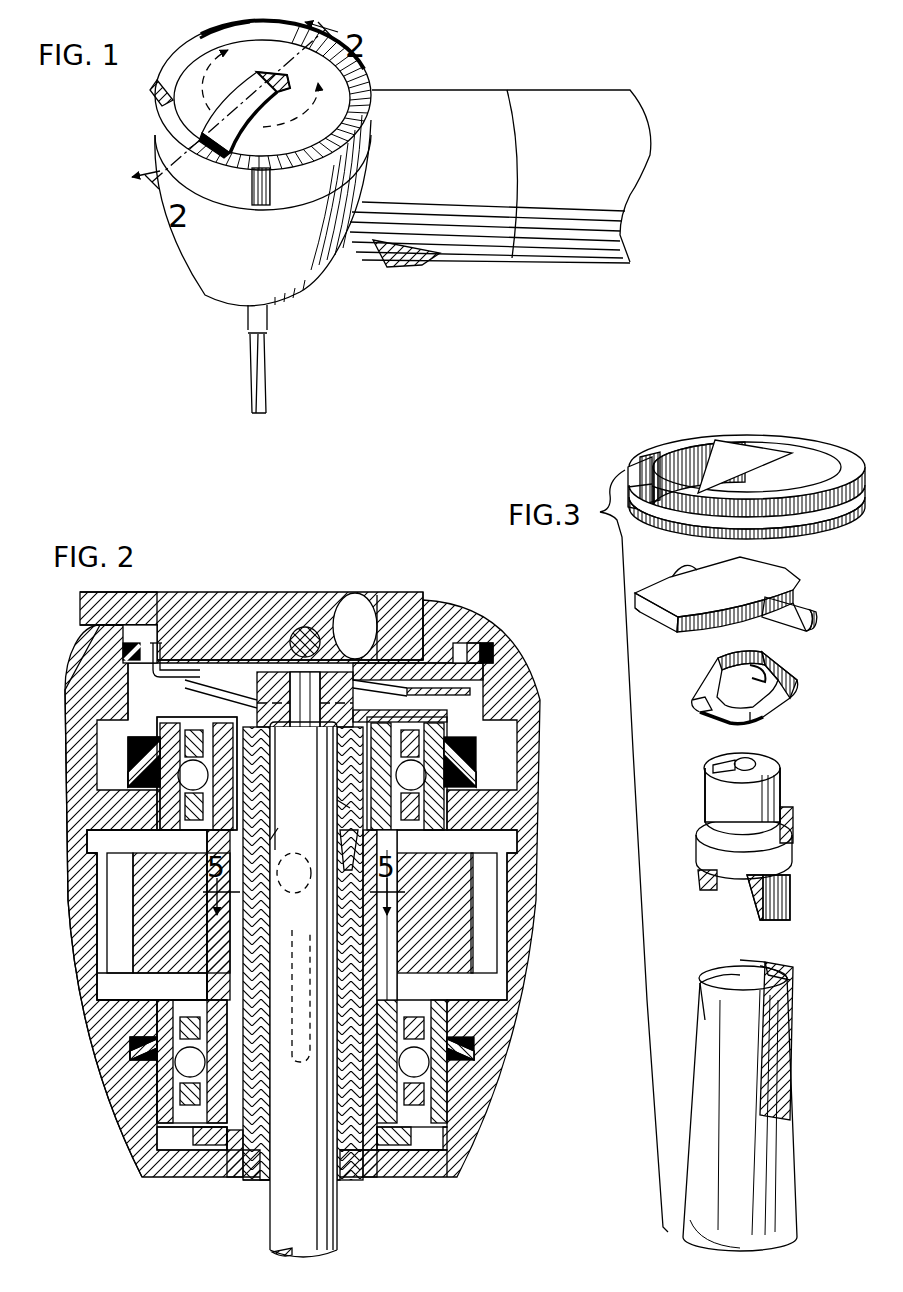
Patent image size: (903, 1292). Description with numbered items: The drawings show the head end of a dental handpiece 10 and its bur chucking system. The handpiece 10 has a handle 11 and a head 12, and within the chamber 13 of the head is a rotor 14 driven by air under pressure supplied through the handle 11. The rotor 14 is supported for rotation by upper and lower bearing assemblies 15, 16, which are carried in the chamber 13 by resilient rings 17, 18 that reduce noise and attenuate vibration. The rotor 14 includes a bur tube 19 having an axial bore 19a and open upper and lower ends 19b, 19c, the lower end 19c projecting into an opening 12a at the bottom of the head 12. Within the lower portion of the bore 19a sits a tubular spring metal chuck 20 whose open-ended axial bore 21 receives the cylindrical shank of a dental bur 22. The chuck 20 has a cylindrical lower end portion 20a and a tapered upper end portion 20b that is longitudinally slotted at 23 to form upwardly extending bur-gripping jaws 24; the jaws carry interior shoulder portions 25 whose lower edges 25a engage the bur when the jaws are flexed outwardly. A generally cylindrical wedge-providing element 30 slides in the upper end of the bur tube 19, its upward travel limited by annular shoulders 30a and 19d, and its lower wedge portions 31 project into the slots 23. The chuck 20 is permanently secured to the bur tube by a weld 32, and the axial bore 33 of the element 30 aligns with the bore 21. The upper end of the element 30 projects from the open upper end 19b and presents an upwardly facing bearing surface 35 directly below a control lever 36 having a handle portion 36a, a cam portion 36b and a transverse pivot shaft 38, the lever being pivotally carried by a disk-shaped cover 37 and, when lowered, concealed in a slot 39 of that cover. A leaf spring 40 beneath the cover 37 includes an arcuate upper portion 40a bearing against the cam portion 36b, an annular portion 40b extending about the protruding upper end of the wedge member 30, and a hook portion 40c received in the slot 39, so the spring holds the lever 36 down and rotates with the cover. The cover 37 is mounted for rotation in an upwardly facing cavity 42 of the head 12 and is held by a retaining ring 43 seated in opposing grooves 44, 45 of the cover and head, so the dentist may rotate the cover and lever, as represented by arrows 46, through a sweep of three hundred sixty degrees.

In FIG. 1, the handpiece 10 is at (484, 86).
In FIG. 2, the handpiece 10 is at (62, 752).
In FIG. 1, the handle 11 is at (557, 247).
In FIG. 1, the head 12 is at (180, 238).
In FIG. 2, the head 12 is at (67, 816).
In FIG. 2, the opening 12a is at (360, 1172).
In FIG. 2, the chamber 13 is at (100, 981).
In FIG. 2, the rotor 14 is at (96, 912).
In FIG. 2, the upper bearing assembly 15 is at (160, 811).
In FIG. 2, the lower bearing assembly 16 is at (157, 1100).
In FIG. 2, the resilient ring 17 is at (128, 779).
In FIG. 2, the resilient ring 18 is at (130, 1046).
In FIG. 2, the bur tube 19 is at (230, 919).
In FIG. 2, the axial bore 19a is at (365, 924).
In FIG. 2, the open upper end 19b is at (228, 700).
In FIG. 2, the open lower end 19c is at (230, 1180).
In FIG. 2, the annular shoulder 19d is at (300, 820).
In FIG. 2, the spring metal chuck 20 is at (370, 966).
In FIG. 3, the spring metal chuck 20 is at (799, 1149).
In FIG. 3, the cylindrical lower end portion 20a is at (697, 1228).
In FIG. 3, the tapered upper end portion 20b is at (710, 1017).
In FIG. 2, the axial bore 21 is at (268, 1150).
In FIG. 1, the dental bur 22 is at (270, 316).
In FIG. 2, the dental bur 22 is at (340, 1233).
In FIG. 3, the slots 23 is at (788, 1049).
In FIG. 2, the bur-gripping jaws 24 is at (258, 953).
In FIG. 3, the bur-gripping jaws 24 is at (707, 987).
In FIG. 2, the interior shoulder portions 25 is at (300, 869).
In FIG. 3, the interior shoulder portions 25 is at (760, 950).
In FIG. 2, the lower edges 25a is at (299, 985).
In FIG. 3, the lower edges 25a is at (788, 982).
In FIG. 2, the wedge-providing element 30 is at (290, 681).
In FIG. 3, the wedge-providing element 30 is at (796, 840).
In FIG. 2, the annular shoulder 30a is at (301, 783).
In FIG. 3, the annular shoulder 30a is at (794, 816).
In FIG. 2, the wedge portions 31 is at (358, 848).
In FIG. 3, the wedge portions 31 is at (698, 878).
In FIG. 2, the weld 32 is at (235, 1170).
In FIG. 2, the axial bore 33 is at (345, 795).
In FIG. 2, the bearing surface 35 is at (305, 699).
In FIG. 1, the control lever 36 is at (247, 123).
In FIG. 2, the control lever 36 is at (315, 592).
In FIG. 3, the control lever 36 is at (802, 580).
In FIG. 1, the handle portion 36a is at (222, 158).
In FIG. 2, the handle portion 36a is at (80, 601).
In FIG. 3, the handle portion 36a is at (667, 625).
In FIG. 1, the cam portion 36b is at (253, 79).
In FIG. 2, the cam portion 36b is at (362, 598).
In FIG. 3, the cam portion 36b is at (813, 633).
In FIG. 1, the cover member 37 is at (180, 105).
In FIG. 3, the cover member 37 is at (790, 443).
In FIG. 2, the pivot shaft 38 is at (292, 600).
In FIG. 3, the pivot shaft 38 is at (816, 612).
In FIG. 3, the slot 39 is at (687, 452).
In FIG. 2, the leaf spring 40 is at (300, 665).
In FIG. 3, the leaf spring 40 is at (805, 679).
In FIG. 2, the arcuate upper portion 40a is at (343, 668).
In FIG. 3, the arcuate upper portion 40a is at (740, 660).
In FIG. 2, the annular portion 40b is at (390, 693).
In FIG. 3, the annular portion 40b is at (770, 707).
In FIG. 2, the hook portion 40c is at (153, 660).
In FIG. 3, the hook portion 40c is at (697, 703).
In FIG. 2, the cavity 42 is at (138, 655).
In FIG. 2, the retaining ring 43 is at (482, 645).
In FIG. 2, the groove 44 is at (456, 643).
In FIG. 3, the groove 44 is at (777, 522).
In FIG. 2, the groove 45 is at (497, 653).
In FIG. 1, the arrows 46 is at (211, 43).